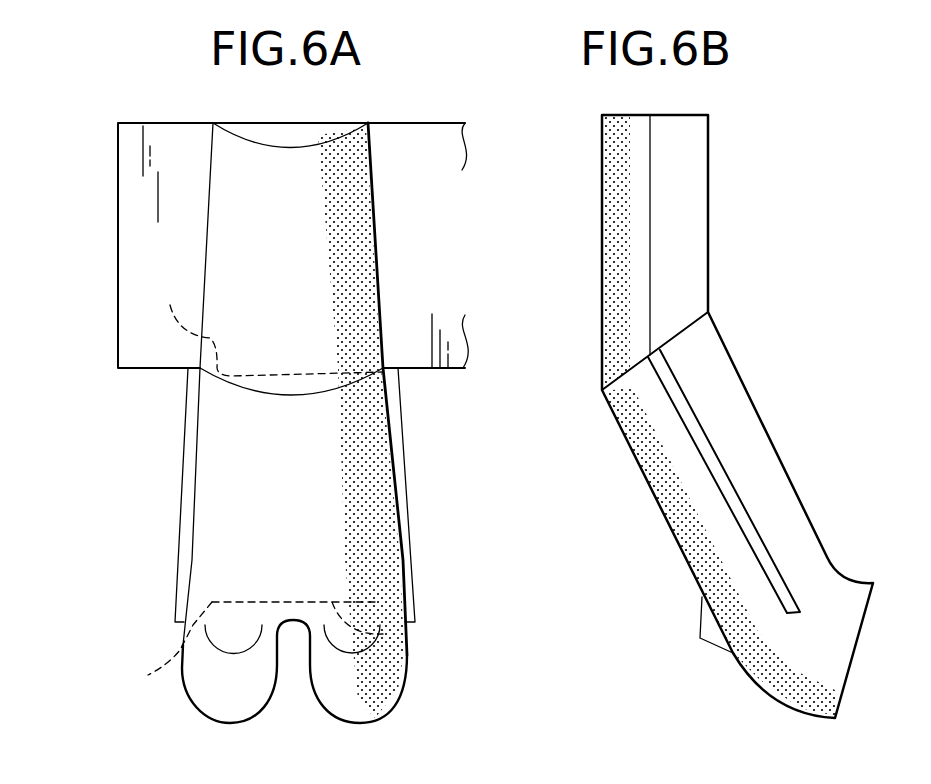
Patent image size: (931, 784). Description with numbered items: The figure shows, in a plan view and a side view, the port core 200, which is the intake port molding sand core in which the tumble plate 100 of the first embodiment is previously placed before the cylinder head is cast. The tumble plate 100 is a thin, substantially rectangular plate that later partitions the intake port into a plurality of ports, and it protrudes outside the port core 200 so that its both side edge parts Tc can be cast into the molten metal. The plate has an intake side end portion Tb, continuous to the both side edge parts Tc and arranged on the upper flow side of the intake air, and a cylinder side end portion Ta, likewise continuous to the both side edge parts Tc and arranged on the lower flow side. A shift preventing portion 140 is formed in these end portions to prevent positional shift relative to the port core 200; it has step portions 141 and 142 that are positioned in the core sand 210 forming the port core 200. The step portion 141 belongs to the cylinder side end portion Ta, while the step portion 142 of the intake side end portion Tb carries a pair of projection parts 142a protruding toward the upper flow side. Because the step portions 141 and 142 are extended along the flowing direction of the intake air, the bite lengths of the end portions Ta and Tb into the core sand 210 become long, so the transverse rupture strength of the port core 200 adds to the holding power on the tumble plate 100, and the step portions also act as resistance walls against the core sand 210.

In FIG. 6A, the port core 200 is at (88, 119).
In FIG. 6A, the core sand 210 is at (368, 238).
In FIG. 6A, the tumble plate 100 is at (165, 434).
In FIG. 6B, the tumble plate 100 is at (708, 411).
In FIG. 6A, the shift preventing portion 140 is at (490, 425).
In FIG. 6A, the step portion 141 is at (377, 602).
In FIG. 6A, the step portion 142 is at (392, 385).
In FIG. 6A, the projection parts 142a is at (245, 491).
In FIG. 6A, the cylinder side end portion Ta is at (383, 634).
In FIG. 6A, the intake side end portion Tb is at (303, 376).
In FIG. 6A, the both side edge parts Tc is at (183, 508).